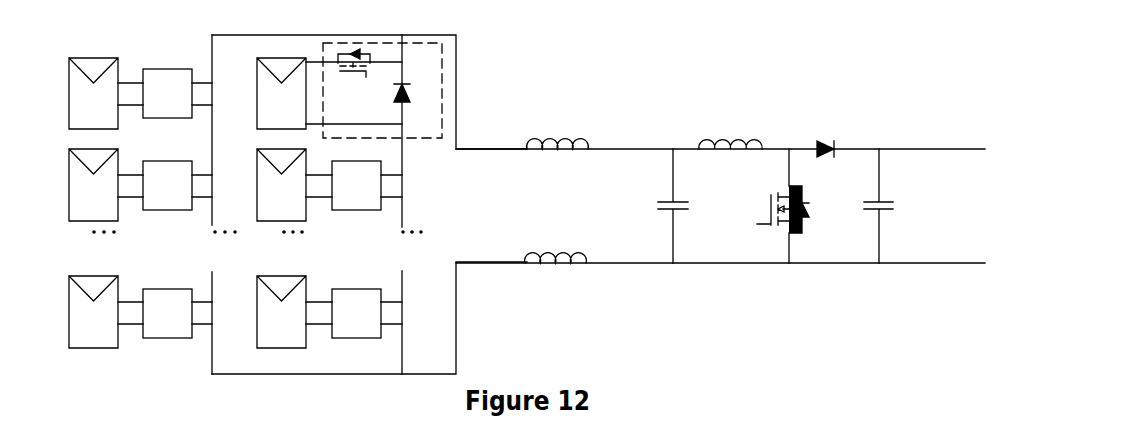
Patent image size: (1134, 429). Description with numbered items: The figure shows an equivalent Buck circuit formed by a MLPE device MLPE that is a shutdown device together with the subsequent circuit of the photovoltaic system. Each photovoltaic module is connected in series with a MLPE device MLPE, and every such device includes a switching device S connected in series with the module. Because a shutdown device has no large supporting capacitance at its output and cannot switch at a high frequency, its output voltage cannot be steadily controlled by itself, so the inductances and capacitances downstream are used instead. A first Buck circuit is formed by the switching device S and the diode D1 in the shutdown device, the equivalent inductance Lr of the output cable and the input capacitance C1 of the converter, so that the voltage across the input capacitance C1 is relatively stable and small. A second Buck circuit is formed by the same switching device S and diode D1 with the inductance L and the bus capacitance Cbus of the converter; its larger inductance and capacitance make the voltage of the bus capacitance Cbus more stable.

The MLPE device MLPE is at (262, 203).
The switching device S is at (354, 76).
The diode D1 is at (414, 95).
The equivalent inductance of the output cable Lr is at (557, 187).
The inductance of the converter L is at (730, 131).
The input capacitance of the converter C1 is at (688, 206).
The bus capacitance of the converter Cbus is at (907, 206).